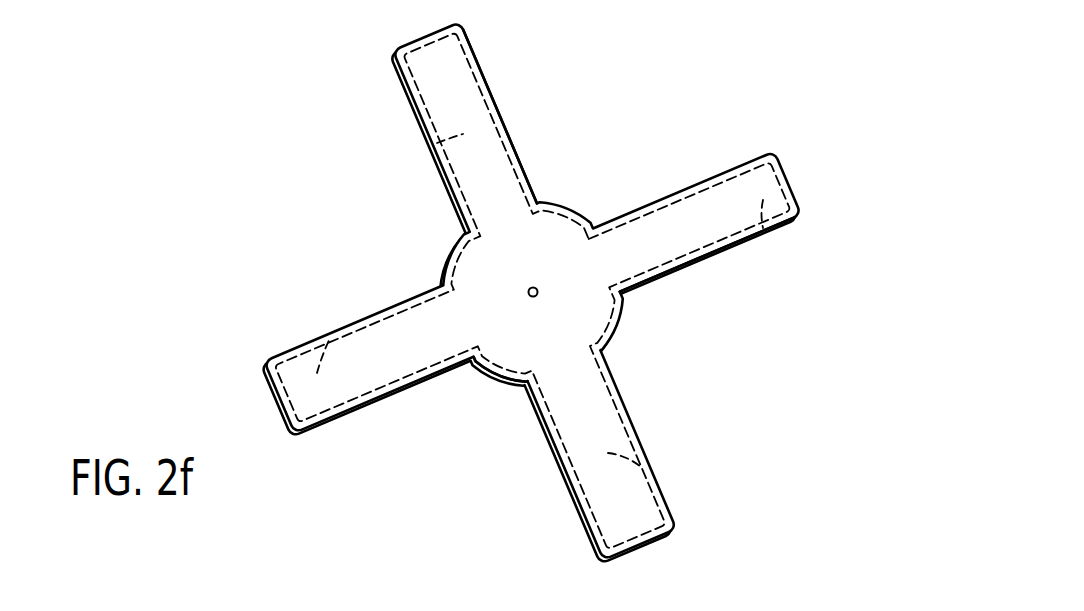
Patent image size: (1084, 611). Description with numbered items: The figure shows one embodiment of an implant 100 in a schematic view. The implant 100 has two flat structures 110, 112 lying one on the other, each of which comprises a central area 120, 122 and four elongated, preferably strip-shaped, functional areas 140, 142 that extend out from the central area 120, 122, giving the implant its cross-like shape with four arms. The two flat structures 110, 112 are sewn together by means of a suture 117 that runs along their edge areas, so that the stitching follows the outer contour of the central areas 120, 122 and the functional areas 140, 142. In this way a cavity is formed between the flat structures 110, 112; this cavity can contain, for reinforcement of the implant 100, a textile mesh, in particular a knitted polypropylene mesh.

The implant 100 is at (645, 90).
The flat structure 110 is at (393, 401).
The flat structure 112 is at (725, 263).
The suture 117 is at (490, 97).
The central area 120 is at (508, 388).
The central area 122 is at (570, 310).
The functional area 140 is at (437, 143).
The functional area 142 is at (438, 87).